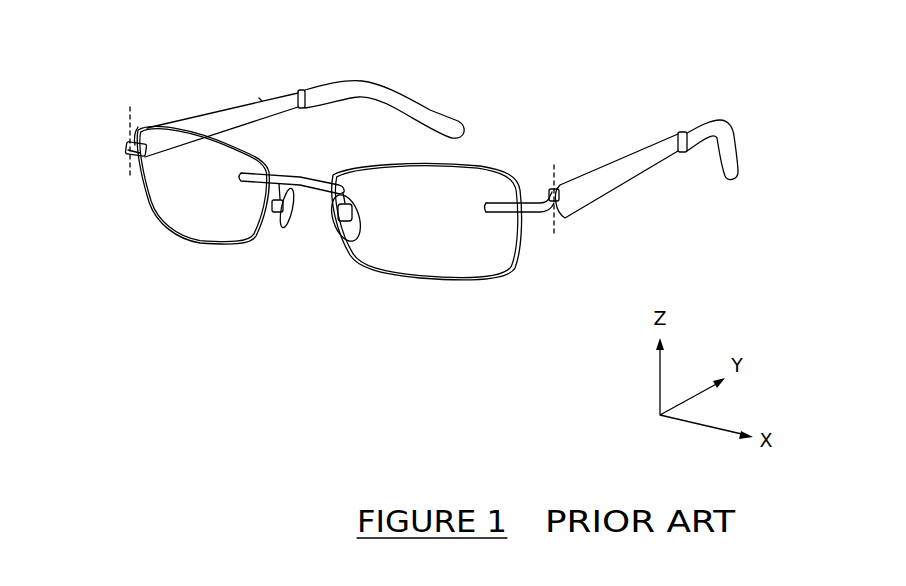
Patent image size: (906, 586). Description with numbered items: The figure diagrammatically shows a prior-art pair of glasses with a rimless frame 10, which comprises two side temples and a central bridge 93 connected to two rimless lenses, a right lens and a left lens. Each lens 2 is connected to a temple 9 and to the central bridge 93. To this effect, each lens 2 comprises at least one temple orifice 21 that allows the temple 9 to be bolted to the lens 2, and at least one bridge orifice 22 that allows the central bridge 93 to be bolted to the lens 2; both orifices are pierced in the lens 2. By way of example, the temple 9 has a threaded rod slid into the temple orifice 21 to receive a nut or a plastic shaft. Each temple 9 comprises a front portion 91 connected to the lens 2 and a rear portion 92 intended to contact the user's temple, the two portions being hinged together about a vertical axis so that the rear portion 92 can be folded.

The rimless frame 10 is at (534, 101).
The lens 2 is at (179, 206).
The temple 9 is at (422, 85).
The temple orifice 21 is at (148, 128).
The bridge orifice 22 is at (240, 177).
The front portion 91 is at (128, 148).
The rear portion 92 is at (259, 98).
The central bridge 93 is at (294, 175).